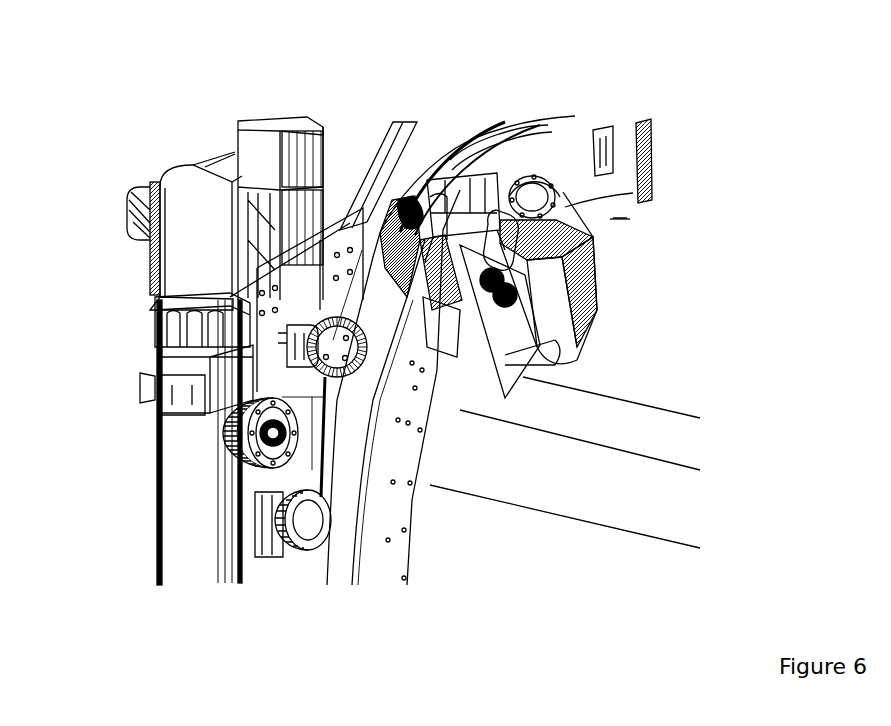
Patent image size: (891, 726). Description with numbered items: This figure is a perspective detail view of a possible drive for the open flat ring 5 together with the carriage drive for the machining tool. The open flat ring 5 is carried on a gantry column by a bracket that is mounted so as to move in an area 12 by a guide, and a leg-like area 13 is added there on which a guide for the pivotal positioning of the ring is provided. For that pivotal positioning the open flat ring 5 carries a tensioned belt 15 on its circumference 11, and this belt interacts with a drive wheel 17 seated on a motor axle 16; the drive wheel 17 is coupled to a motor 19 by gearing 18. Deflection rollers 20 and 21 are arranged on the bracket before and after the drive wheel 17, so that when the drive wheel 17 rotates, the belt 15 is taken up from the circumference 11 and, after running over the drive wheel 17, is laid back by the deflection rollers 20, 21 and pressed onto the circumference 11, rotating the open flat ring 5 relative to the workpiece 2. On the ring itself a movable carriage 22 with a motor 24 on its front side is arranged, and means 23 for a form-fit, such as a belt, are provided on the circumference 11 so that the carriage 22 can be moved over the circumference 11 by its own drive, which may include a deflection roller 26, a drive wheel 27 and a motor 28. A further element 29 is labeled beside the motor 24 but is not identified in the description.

The workpiece 2 is at (513, 350).
The open flat ring 5 is at (613, 177).
The circumference 11 is at (495, 135).
The area 12 is at (390, 112).
The leg-like area 13 is at (150, 296).
The tensioned belt 15 is at (275, 465).
The motor axle 16 is at (325, 470).
The drive wheel 17 is at (236, 432).
The gearing 18 is at (185, 407).
The motor 19 is at (200, 222).
The deflection roller 20 is at (220, 578).
The deflection roller 21 is at (205, 167).
The movable carriage 22 is at (516, 372).
The means for a form-fit 23 is at (377, 180).
The motor 24 is at (600, 307).
The deflection roller 26 is at (463, 127).
The drive wheel 27 is at (413, 205).
The motor 28 is at (430, 360).
The gearbox 29 is at (534, 196).